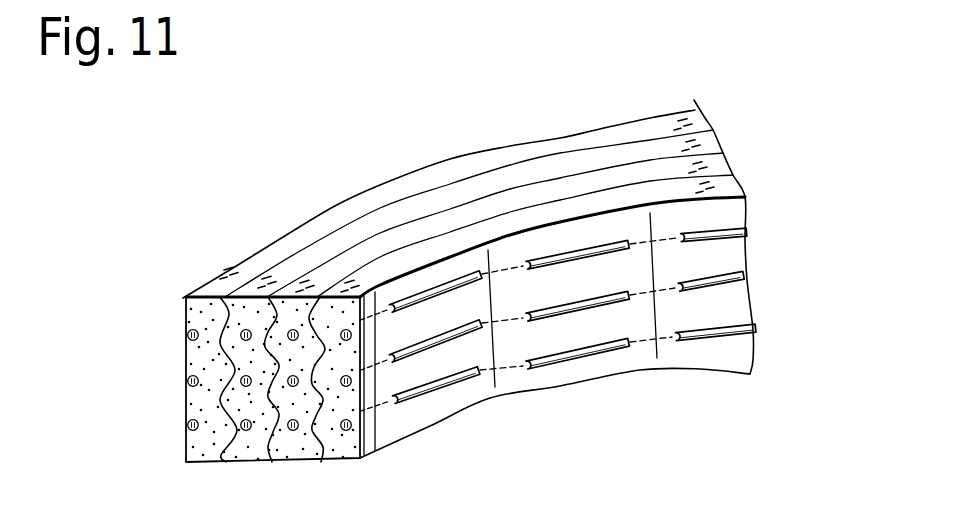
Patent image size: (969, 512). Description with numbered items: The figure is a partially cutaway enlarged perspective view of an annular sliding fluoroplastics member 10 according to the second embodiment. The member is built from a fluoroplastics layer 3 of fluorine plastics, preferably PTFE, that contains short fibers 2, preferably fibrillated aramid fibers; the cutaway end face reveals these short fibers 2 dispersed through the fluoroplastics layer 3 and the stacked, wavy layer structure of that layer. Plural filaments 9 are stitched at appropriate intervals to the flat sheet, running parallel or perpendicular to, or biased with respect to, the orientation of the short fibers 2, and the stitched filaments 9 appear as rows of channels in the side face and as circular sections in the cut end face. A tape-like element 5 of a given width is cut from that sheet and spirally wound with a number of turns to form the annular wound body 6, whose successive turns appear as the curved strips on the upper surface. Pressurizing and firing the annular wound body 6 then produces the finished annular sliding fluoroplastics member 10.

The annular sliding fluoroplastics member 10 is at (225, 226).
The fluoroplastics layer 3 is at (250, 297).
The annular wound body 6 is at (448, 147).
The tape-like element 5 is at (570, 163).
The filaments 9 is at (245, 381).
The short fibers 2 is at (257, 453).